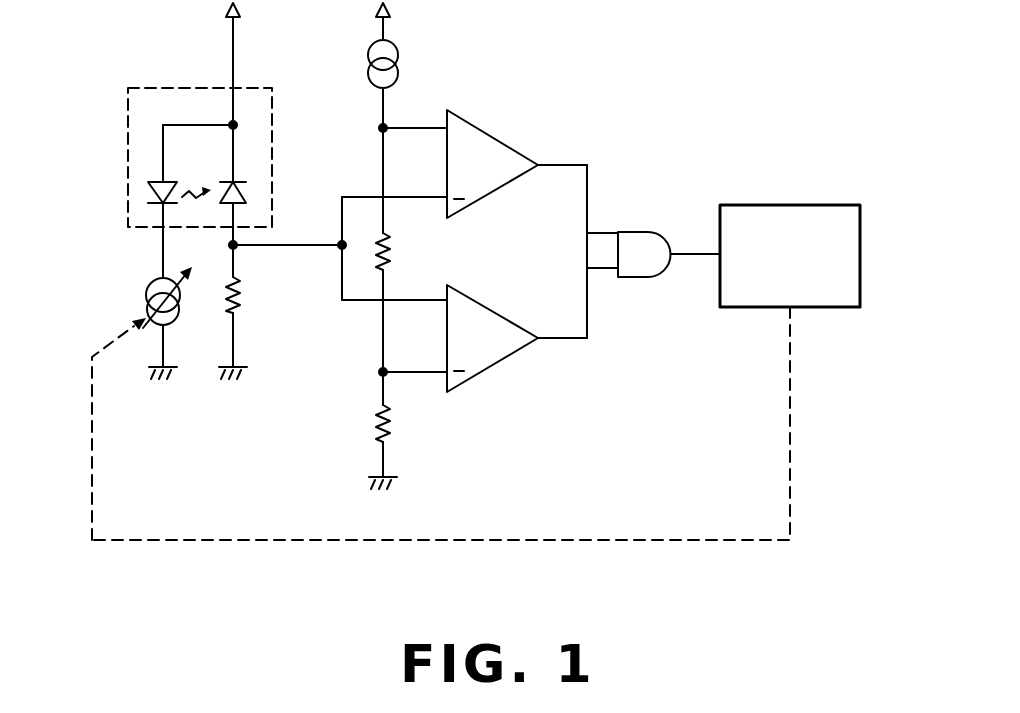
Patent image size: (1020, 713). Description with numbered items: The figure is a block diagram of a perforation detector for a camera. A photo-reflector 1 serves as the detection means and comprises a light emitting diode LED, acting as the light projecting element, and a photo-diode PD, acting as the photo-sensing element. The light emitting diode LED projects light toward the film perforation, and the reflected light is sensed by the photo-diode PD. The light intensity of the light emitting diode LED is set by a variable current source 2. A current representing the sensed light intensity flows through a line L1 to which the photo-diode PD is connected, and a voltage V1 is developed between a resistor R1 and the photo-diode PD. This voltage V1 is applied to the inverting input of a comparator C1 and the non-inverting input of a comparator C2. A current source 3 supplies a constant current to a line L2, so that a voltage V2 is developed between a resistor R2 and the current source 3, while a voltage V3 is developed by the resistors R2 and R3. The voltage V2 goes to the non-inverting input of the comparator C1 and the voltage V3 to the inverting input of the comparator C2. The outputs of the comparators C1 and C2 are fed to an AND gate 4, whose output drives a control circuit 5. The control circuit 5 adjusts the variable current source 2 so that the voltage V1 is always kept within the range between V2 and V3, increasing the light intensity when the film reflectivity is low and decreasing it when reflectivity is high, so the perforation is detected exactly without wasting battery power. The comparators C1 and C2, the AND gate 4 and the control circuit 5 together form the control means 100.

The control means 100 is at (628, 128).
The photo-reflector 1 is at (140, 88).
The light emitting diode LED is at (147, 182).
The photo-diode PD is at (248, 194).
The line L1 is at (235, 42).
The line L2 is at (385, 110).
The voltage V1 is at (287, 230).
The voltage V2 is at (408, 180).
The voltage V3 is at (413, 358).
The resistor R1 is at (246, 297).
The resistor R2 is at (391, 249).
The resistor R3 is at (391, 423).
The variable current source 2 is at (148, 291).
The current source 3 is at (398, 50).
The comparator C1 is at (493, 137).
The comparator C2 is at (495, 365).
The AND gate 4 is at (640, 232).
The control circuit 5 is at (818, 205).